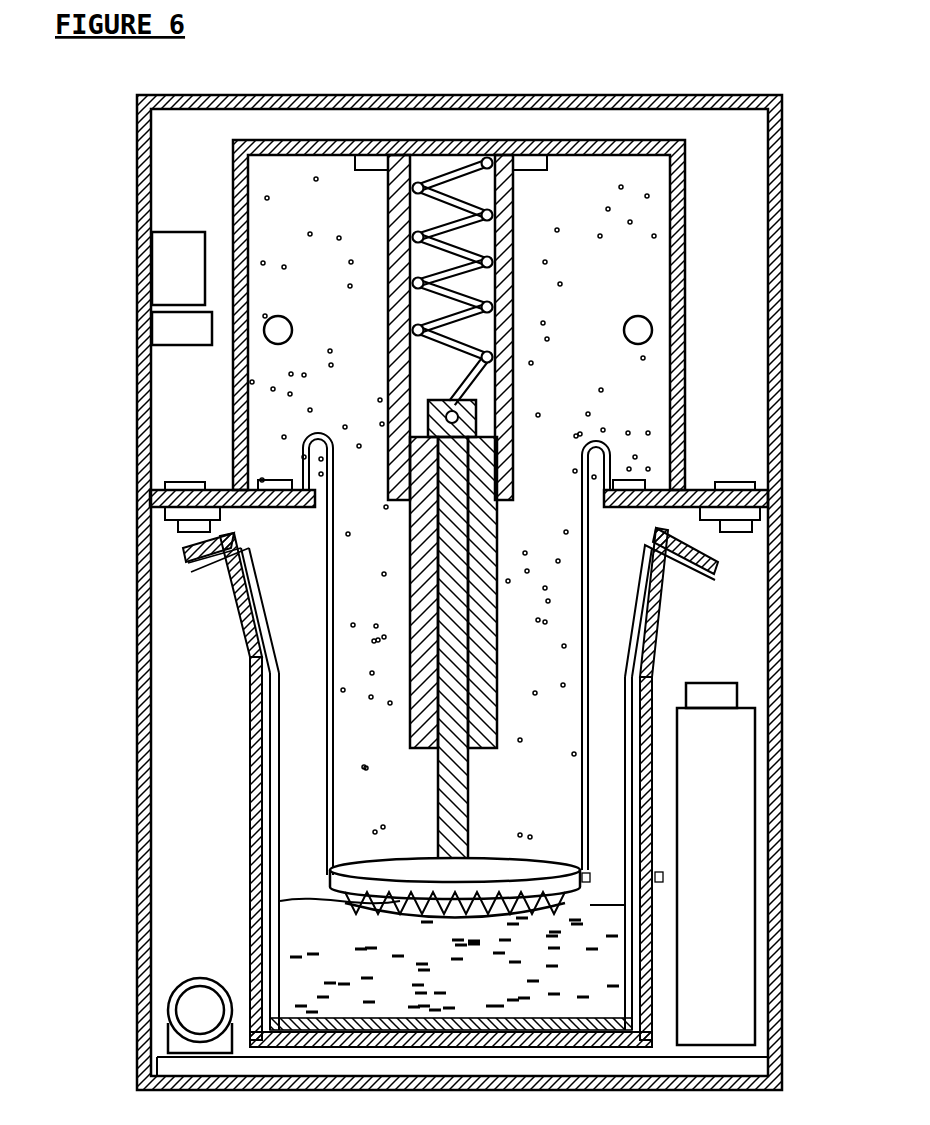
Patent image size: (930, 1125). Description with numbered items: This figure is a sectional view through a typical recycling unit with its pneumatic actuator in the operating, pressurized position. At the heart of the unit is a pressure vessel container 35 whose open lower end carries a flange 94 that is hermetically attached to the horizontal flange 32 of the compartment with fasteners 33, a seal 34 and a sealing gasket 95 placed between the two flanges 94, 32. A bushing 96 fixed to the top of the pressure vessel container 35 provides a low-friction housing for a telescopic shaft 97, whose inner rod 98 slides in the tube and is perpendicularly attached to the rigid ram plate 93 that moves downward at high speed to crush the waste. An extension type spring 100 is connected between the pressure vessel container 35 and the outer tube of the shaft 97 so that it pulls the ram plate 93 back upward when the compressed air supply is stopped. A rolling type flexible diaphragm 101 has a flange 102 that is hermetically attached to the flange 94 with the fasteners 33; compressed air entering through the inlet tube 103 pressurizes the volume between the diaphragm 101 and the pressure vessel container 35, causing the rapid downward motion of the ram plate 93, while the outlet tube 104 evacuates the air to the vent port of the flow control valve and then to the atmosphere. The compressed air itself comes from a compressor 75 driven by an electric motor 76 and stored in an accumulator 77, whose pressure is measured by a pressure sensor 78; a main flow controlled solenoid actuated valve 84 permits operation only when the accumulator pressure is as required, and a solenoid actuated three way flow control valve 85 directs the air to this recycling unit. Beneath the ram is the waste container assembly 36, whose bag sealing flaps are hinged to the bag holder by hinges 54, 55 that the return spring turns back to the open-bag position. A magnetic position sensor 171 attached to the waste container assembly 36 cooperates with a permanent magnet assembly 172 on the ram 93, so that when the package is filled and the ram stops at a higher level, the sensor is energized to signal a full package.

The horizontal flange 32 is at (183, 518).
The fasteners 33 is at (272, 483).
The seal 34 is at (748, 512).
The pressure vessel container 35 is at (233, 228).
The waste container assembly 36 is at (335, 860).
The hinge 54 is at (250, 657).
The hinge 55 is at (648, 655).
The compressor 75 is at (194, 1015).
The electric motor 76 is at (172, 1000).
The accumulator 77 is at (718, 855).
The pressure sensor 78 is at (712, 690).
The main flow controlled solenoid actuated valve 84 is at (172, 265).
The solenoid actuated three way flow control valve 85 is at (172, 322).
The rigid ram plate 93 is at (410, 868).
The flange 94 is at (152, 488).
The sealing gasket 95 is at (155, 497).
The bushing 96 is at (389, 162).
The telescopic shaft 97 is at (424, 432).
The inner rod 98 is at (496, 395).
The extension type spring 100 is at (462, 420).
The rolling type flexible diaphragm 101 is at (303, 440).
The flange 102 is at (187, 560).
The inlet tube 103 is at (265, 330).
The outlet tube 104 is at (650, 332).
The magnetic position sensor 171 is at (662, 880).
The permanent magnet assembly 172 is at (590, 880).